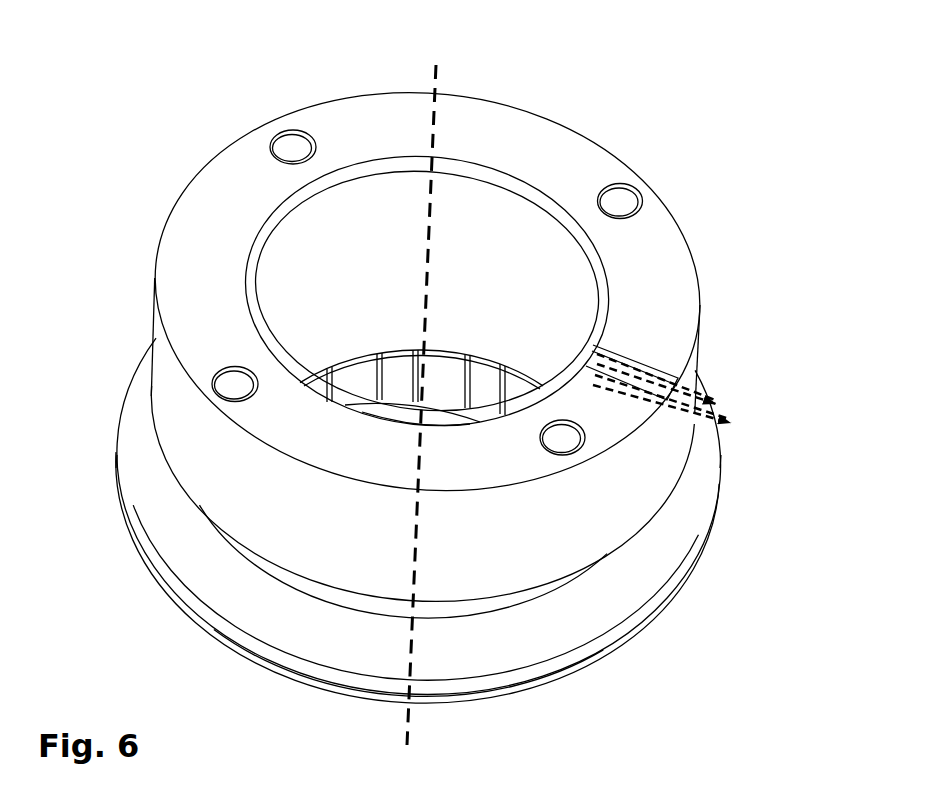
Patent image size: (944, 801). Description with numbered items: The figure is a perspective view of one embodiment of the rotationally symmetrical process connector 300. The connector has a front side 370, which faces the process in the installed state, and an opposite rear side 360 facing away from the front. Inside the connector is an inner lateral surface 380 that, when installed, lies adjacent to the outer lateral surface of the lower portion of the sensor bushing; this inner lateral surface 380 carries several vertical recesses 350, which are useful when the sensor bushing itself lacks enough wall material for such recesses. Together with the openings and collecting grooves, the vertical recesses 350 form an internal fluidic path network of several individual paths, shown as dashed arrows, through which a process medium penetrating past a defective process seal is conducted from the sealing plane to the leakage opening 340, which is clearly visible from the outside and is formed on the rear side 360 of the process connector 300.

The process connector 300 is at (733, 193).
The leakage opening 340 is at (667, 363).
The vertical recesses 350 is at (398, 365).
The rear side 360 is at (400, 113).
The front side 370 is at (483, 718).
The inner lateral surface 380 is at (355, 385).